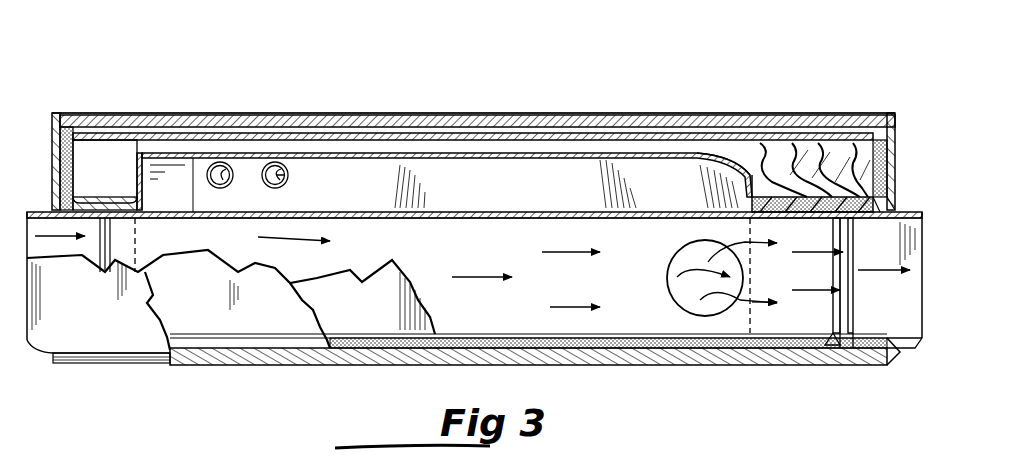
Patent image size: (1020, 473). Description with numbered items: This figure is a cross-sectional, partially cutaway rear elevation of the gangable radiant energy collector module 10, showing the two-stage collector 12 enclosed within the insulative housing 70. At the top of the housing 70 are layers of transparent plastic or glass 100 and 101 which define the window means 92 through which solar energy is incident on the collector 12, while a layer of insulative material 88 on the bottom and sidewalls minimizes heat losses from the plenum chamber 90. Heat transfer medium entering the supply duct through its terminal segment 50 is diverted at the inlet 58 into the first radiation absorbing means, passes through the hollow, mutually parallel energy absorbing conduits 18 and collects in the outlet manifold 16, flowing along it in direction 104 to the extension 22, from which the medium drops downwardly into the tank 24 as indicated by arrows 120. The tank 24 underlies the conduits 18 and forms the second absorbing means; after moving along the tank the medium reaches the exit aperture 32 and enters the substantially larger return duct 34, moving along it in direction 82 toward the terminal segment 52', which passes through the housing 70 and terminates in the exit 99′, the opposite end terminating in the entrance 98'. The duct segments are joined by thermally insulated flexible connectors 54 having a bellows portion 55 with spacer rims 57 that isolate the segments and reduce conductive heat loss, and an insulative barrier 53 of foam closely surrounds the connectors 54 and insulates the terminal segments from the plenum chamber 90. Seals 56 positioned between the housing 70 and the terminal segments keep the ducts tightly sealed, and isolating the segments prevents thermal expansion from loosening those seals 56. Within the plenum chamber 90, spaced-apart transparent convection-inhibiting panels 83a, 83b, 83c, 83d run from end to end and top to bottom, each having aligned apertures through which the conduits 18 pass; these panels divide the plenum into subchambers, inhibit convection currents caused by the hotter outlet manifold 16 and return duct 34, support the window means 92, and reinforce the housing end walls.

The gangable radiant energy collector module 10 is at (470, 86).
The two stage collector 12 is at (500, 148).
The outlet manifold 16 is at (478, 153).
The energy absorbing conduits 18 is at (274, 162).
The extension 22 is at (140, 160).
The tank 24 is at (760, 274).
The outlet aperture 32 is at (672, 272).
The return duct 34 is at (352, 323).
The terminal segment 50 is at (48, 210).
The terminal segment 52' is at (909, 358).
The insulative barrier 53 is at (880, 345).
The flexible connectors 54 is at (843, 342).
The bellows portion 55 is at (845, 346).
The seals 56 is at (895, 210).
The spacer rims 57 is at (838, 340).
The inlet 58 is at (752, 172).
The insulative housing 70 is at (114, 323).
The flow direction 82 is at (512, 277).
The transparent convection-inhibiting panel 83a is at (760, 141).
The transparent convection-inhibiting panel 83b is at (793, 141).
The transparent convection-inhibiting panel 83c is at (820, 141).
The transparent convection-inhibiting panel 83d is at (860, 141).
The layer of insulative material 88 is at (58, 150).
The plenum chamber 90 is at (560, 143).
The window means 92 is at (111, 120).
The entrance 98' is at (31, 364).
The exit 99′ is at (922, 216).
The transparent layer 100 is at (347, 120).
The transparent layer 101 is at (400, 137).
The flow direction 104 is at (245, 200).
The flow arrows 120 is at (172, 168).